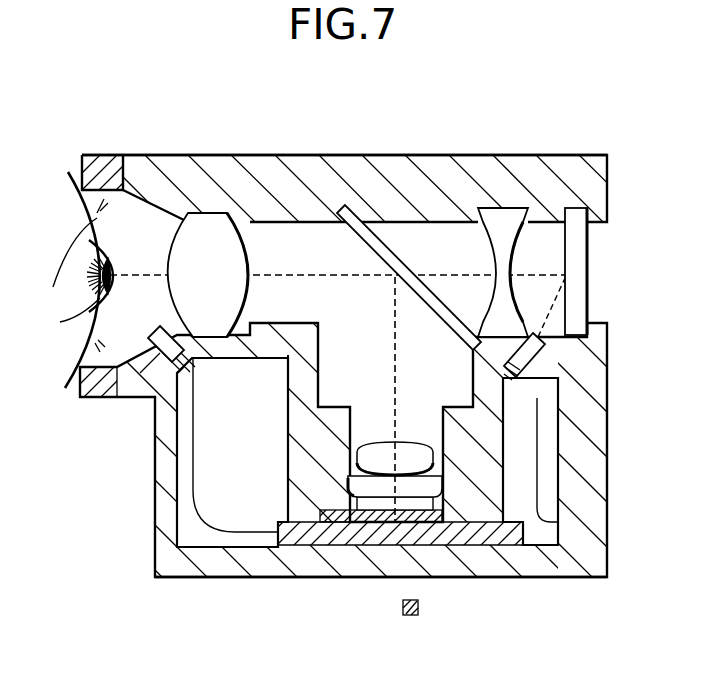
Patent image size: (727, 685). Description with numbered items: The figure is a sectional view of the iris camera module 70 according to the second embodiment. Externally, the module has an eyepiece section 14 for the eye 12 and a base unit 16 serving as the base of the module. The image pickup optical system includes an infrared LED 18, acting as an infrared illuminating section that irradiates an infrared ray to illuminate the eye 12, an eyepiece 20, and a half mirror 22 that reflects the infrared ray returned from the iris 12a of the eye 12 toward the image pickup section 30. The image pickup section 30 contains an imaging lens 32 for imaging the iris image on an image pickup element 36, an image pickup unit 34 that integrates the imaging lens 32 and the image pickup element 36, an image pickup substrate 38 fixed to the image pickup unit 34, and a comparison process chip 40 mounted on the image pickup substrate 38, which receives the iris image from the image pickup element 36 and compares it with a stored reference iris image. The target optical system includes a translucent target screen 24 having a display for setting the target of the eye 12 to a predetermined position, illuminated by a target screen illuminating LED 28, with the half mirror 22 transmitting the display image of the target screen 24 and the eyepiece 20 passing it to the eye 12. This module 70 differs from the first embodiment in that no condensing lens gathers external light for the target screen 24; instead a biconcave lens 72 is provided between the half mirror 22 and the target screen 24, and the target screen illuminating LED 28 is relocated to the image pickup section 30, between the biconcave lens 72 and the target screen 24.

The eye 12 is at (67, 240).
The iris 12a is at (70, 318).
The eyepiece section 14 is at (103, 155).
The base unit 16 is at (313, 155).
The infrared LED 18 is at (147, 385).
The eyepiece 20 is at (252, 245).
The half mirror 22 is at (443, 318).
The target screen 24 is at (590, 250).
The target screen illuminating LED 28 is at (560, 368).
The image pickup section 30 is at (363, 404).
The imaging lens 32 is at (413, 440).
The image pickup unit 34 is at (332, 442).
The image pickup element 36 is at (346, 484).
The image pickup substrate 38 is at (463, 570).
The comparison process chip 40 is at (385, 547).
The iris camera module 70 is at (609, 116).
The biconcave lens 72 is at (492, 247).